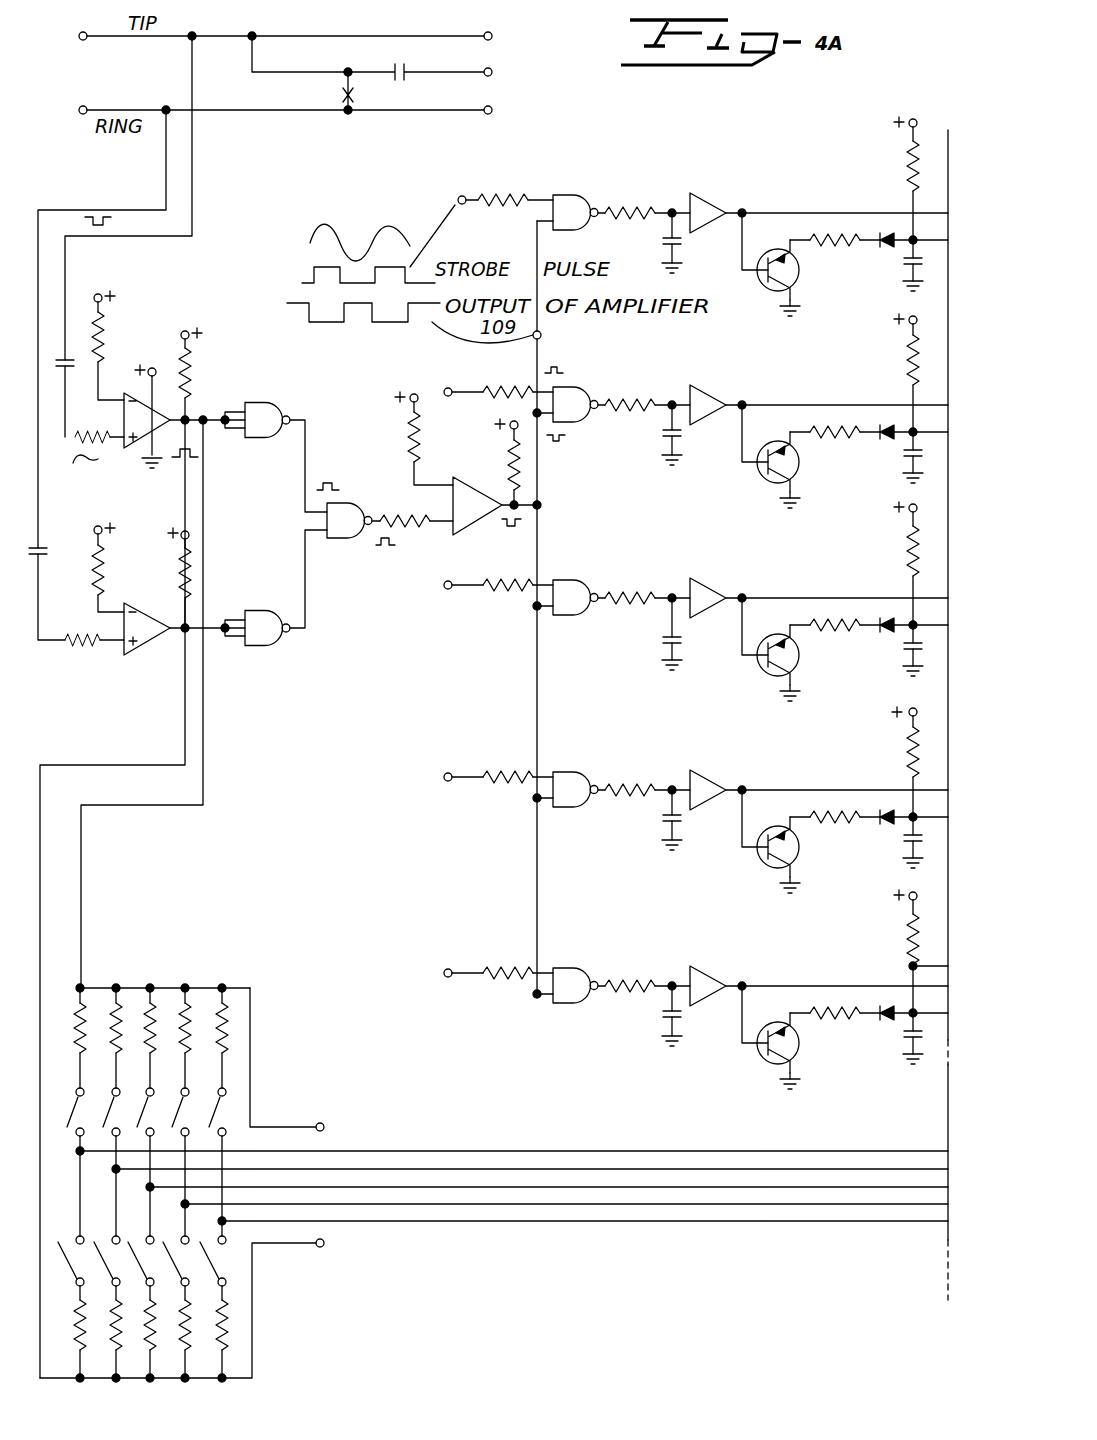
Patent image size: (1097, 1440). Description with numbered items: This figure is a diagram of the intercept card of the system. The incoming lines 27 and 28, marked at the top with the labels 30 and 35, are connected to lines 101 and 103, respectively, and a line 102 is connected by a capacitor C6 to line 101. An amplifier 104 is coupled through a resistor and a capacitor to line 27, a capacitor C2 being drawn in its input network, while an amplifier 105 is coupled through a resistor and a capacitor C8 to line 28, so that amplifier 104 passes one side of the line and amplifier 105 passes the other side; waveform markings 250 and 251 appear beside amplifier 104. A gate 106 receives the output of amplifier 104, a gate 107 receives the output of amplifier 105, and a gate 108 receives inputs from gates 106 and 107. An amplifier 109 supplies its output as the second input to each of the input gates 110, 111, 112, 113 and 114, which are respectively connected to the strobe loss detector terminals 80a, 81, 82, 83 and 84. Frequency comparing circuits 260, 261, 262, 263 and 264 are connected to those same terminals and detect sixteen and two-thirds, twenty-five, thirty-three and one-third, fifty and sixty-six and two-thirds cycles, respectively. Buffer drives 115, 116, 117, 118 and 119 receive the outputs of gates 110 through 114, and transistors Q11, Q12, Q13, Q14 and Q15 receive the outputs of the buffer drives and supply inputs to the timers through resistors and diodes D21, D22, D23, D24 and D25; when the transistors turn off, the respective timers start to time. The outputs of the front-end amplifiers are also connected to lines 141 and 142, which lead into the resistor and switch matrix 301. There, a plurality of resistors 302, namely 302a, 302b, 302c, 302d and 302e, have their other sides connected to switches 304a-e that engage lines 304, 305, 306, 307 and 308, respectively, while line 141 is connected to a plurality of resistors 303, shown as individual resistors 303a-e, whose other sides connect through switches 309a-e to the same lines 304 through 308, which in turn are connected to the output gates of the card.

The line 27 is at (94, 22).
The line 28 is at (94, 96).
The tip lead (FIG. 1) 30 is at (378, 38).
The ring lead (FIG. 1) 35 is at (398, 118).
The line 101 is at (491, 33).
The line 102 is at (491, 69).
The line 103 is at (491, 107).
The capacitor C6 is at (368, 73).
The capacitor C2 is at (75, 385).
The capacitor C8 is at (49, 561).
The amplifier 104 is at (160, 414).
The amplifier 105 is at (146, 606).
The gate 106 is at (272, 408).
The gate 107 is at (285, 598).
The gate 108 is at (362, 506).
The amplifier 109 is at (478, 490).
The waveform 250 is at (98, 470).
The pulse waveform 251 is at (177, 466).
The line 141 is at (185, 718).
The line 142 is at (205, 745).
The strobe loss detector terminal 80a is at (449, 204).
The strobe loss detector terminal 81 is at (456, 378).
The strobe loss detector terminal 82 is at (446, 596).
The strobe loss detector terminal 83 is at (450, 773).
The strobe loss detector terminal 84 is at (450, 969).
The input gate 110 is at (583, 197).
The input gate 111 is at (583, 389).
The input gate 112 is at (583, 582).
The input gate 113 is at (583, 774).
The input gate 114 is at (583, 968).
The buffer drive 115 is at (712, 203).
The buffer drive 116 is at (712, 395).
The buffer drive 117 is at (712, 588).
The buffer drive 118 is at (712, 780).
The buffer drive 119 is at (722, 958).
The frequency comparing circuit 260 is at (803, 191).
The frequency comparing circuit 261 is at (820, 368).
The frequency comparing circuit 262 is at (783, 590).
The frequency comparing circuit 263 is at (800, 785).
The frequency comparing circuit 264 is at (822, 963).
The transistor Q11 is at (802, 278).
The transistor Q12 is at (767, 470).
The transistor Q13 is at (765, 663).
The transistor Q14 is at (765, 855).
The transistor Q15 is at (763, 1051).
The diode D21 is at (887, 250).
The diode D22 is at (887, 442).
The diode D23 is at (887, 635).
The diode D24 is at (890, 828).
The diode D25 is at (887, 1023).
The switch matrix 301 is at (233, 928).
The resistors 302 is at (260, 1030).
The resistor 302a is at (92, 1015).
The resistor 302b is at (128, 1020).
The resistor 302c is at (165, 1020).
The resistor 302d is at (198, 1018).
The resistor 302e is at (232, 1020).
The switches 304a-e is at (235, 1112).
The line 304 is at (559, 1150).
The line 305 is at (657, 1168).
The line 306 is at (556, 1189).
The line 307 is at (648, 1207).
The line 308 is at (762, 1224).
The switches 309a-e is at (232, 1265).
The resistors 303a-e is at (230, 1340).
The resistors 303 is at (262, 1333).